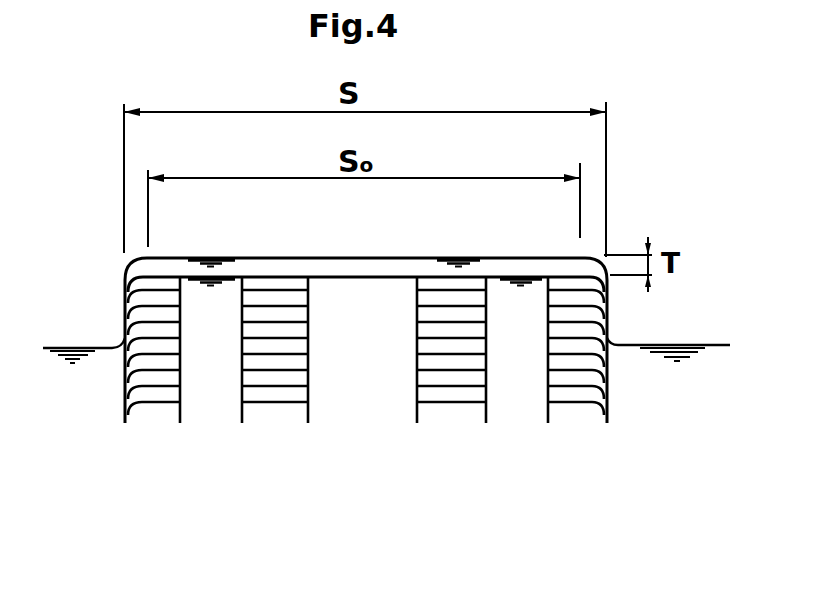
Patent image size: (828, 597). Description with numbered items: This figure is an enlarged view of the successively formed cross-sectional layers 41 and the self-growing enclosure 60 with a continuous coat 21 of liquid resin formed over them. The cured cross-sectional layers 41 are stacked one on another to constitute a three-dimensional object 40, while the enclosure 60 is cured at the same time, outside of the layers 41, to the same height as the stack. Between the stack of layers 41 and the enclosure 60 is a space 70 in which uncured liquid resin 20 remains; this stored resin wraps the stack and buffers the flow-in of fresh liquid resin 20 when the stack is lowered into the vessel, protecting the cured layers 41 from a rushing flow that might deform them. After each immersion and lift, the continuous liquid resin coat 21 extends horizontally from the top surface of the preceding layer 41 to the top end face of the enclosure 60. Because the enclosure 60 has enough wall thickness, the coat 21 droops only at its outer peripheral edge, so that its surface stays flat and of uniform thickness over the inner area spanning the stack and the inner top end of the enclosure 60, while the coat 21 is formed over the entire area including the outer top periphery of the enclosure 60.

The liquid resin 20 is at (692, 355).
The continuous liquid resin coat 21 is at (537, 266).
The three-dimensional object 40 is at (233, 404).
The cross-sectional layer 41 is at (462, 283).
The self-growing enclosure 60 is at (127, 387).
The space 70 is at (203, 305).